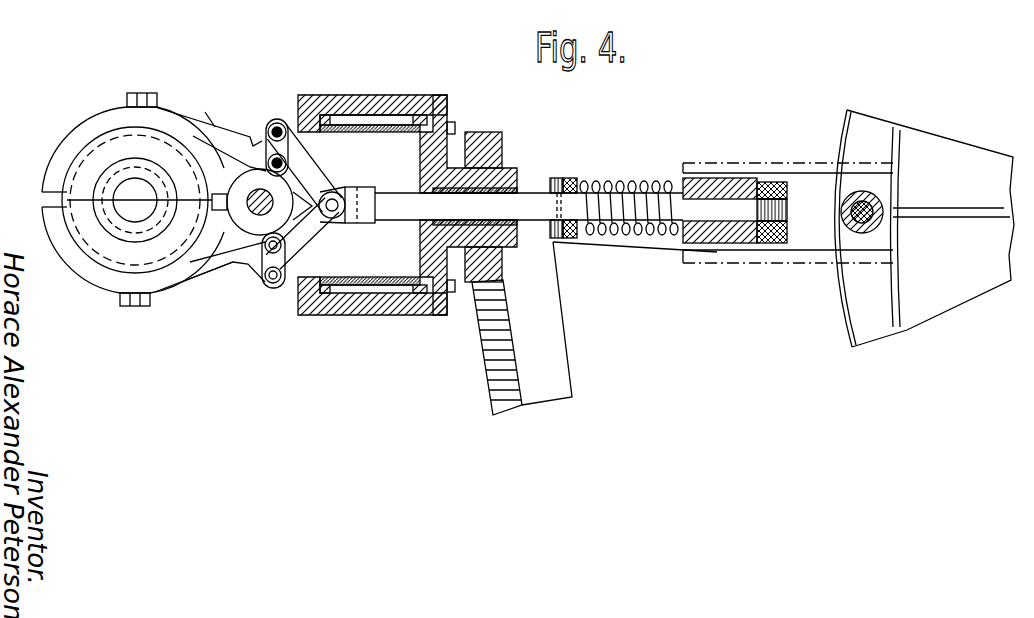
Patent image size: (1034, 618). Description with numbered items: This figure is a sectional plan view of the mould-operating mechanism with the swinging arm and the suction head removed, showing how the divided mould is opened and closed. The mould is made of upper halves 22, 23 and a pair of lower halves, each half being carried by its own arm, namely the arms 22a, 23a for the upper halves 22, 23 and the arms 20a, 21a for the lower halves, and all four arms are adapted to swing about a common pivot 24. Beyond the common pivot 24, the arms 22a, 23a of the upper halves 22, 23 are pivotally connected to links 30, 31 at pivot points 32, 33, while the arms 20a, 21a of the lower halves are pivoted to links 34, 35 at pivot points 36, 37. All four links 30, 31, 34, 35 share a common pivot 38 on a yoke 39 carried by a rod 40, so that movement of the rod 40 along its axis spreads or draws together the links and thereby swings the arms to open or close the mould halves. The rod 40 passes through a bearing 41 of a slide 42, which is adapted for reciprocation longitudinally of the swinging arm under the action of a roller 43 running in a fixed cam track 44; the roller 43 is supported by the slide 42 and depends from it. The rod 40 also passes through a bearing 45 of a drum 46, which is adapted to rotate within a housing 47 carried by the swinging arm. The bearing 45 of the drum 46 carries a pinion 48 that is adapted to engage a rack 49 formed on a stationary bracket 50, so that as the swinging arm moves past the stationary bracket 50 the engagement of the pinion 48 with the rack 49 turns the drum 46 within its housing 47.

The arm 20a is at (209, 125).
The arm 21a is at (238, 265).
The upper mould half 22 is at (98, 157).
The arm 22a is at (203, 125).
The upper mould half 23 is at (110, 255).
The arm 23a is at (203, 258).
The common pivot 24 is at (248, 192).
The link 30 is at (303, 176).
The link 31 is at (350, 290).
The pivot connection 32 is at (268, 128).
The pivot connection 33 is at (305, 262).
The link 34 is at (340, 198).
The link 35 is at (360, 224).
The pivot connection 36 is at (286, 120).
The pivot connection 37 is at (265, 282).
The common pivot 38 is at (348, 205).
The yoke 39 is at (368, 224).
The rod 40 is at (525, 206).
The bearing 41 is at (712, 184).
The slide 42 is at (740, 165).
The roller 43 is at (845, 198).
The fixed cam track 44 is at (858, 318).
The bearing 45 is at (482, 165).
The drum 46 is at (410, 297).
The housing 47 is at (372, 84).
The pinion 48 is at (504, 268).
The rack 49 is at (490, 330).
The stationary bracket 50 is at (626, 181).